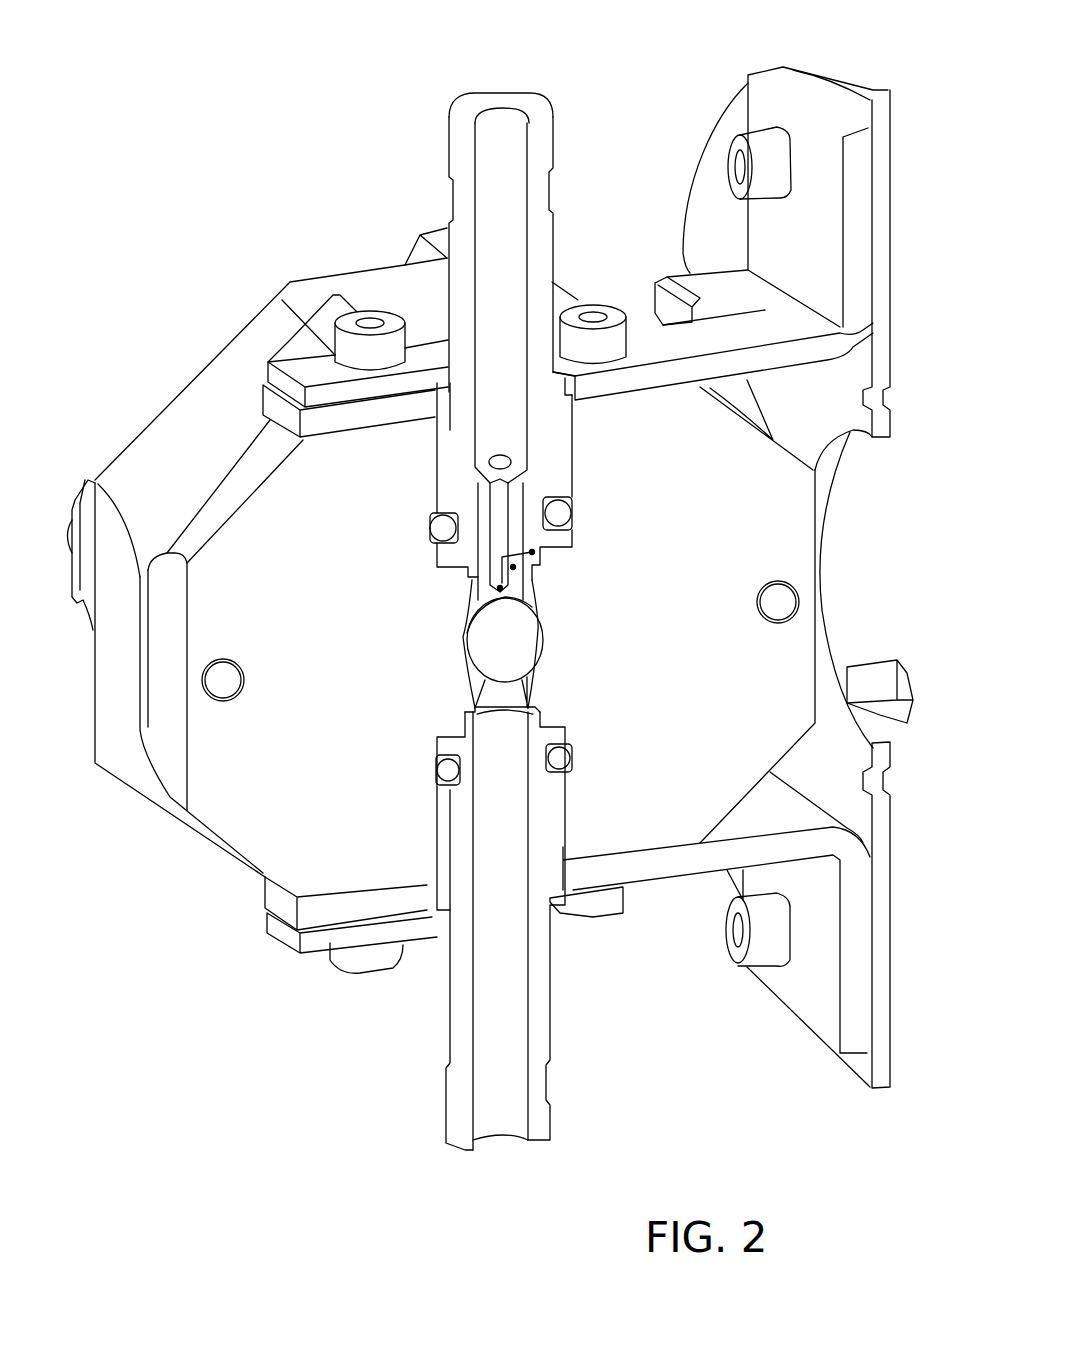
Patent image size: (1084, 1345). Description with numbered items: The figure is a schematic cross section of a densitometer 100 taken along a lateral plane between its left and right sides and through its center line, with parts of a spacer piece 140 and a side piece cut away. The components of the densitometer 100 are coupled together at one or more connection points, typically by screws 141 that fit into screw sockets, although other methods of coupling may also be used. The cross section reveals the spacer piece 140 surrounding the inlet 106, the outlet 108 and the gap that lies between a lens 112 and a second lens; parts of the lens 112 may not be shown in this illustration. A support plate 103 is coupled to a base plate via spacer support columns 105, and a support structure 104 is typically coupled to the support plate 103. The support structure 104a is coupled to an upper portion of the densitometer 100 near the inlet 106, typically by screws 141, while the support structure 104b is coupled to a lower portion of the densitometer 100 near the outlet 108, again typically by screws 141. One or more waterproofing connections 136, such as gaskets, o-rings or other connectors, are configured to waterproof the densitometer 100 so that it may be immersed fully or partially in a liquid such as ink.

The densitometer 100 is at (318, 148).
The support plate 103 is at (878, 1092).
The support structure 104 is at (760, 232).
The support structure 104a is at (265, 385).
The support structure 104b is at (285, 915).
The spacer support column 105 is at (902, 670).
The inlet 106 is at (500, 105).
The outlet 108 is at (500, 1128).
The lens 112 is at (500, 647).
The waterproofing connection 136 is at (585, 517).
The spacer piece 140 is at (233, 537).
The screw 141 is at (367, 322).